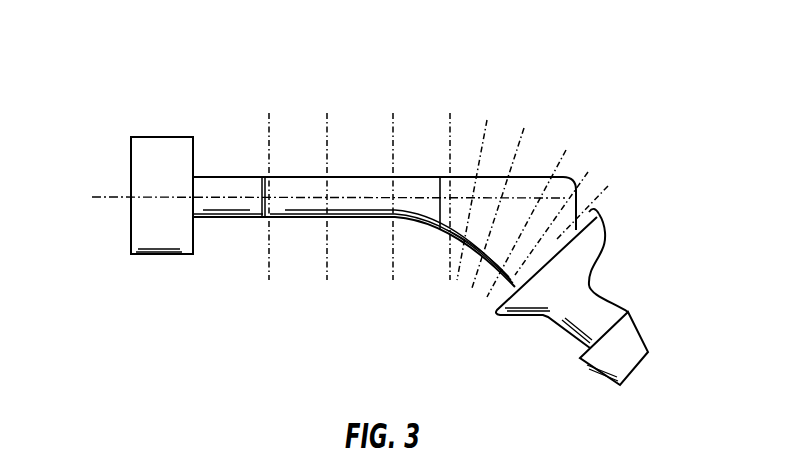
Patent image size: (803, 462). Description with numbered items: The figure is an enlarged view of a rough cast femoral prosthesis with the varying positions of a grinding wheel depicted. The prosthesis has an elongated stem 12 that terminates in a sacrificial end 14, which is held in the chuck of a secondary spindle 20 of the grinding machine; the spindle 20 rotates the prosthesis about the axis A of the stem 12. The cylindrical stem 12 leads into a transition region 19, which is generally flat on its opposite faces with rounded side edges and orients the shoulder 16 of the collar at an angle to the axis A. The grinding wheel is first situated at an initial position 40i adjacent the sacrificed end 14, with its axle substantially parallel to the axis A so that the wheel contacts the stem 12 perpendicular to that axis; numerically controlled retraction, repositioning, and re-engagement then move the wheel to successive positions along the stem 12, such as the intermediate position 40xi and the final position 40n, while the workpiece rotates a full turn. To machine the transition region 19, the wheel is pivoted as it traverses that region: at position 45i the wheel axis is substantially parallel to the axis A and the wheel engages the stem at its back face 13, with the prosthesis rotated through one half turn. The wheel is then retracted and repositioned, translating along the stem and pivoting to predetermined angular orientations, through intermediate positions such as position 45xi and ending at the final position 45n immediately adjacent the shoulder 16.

The axis of the stem A is at (121, 193).
The secondary spindle 20 is at (160, 143).
The elongated stem 12 is at (298, 218).
The sacrificial end 14 is at (227, 212).
The initial grinding wheel position 40i is at (270, 113).
The intermediate grinding wheel position 40xi is at (327, 113).
The final grinding wheel position 40n is at (393, 113).
The initial transition-region grinding position 45i is at (450, 113).
The intermediate transition-region grinding position 45xi is at (486, 118).
The final transition-region grinding position 45n is at (603, 190).
The transition region 19 is at (483, 185).
The back face of the stem 13 is at (527, 174).
The shoulder 16 is at (592, 212).